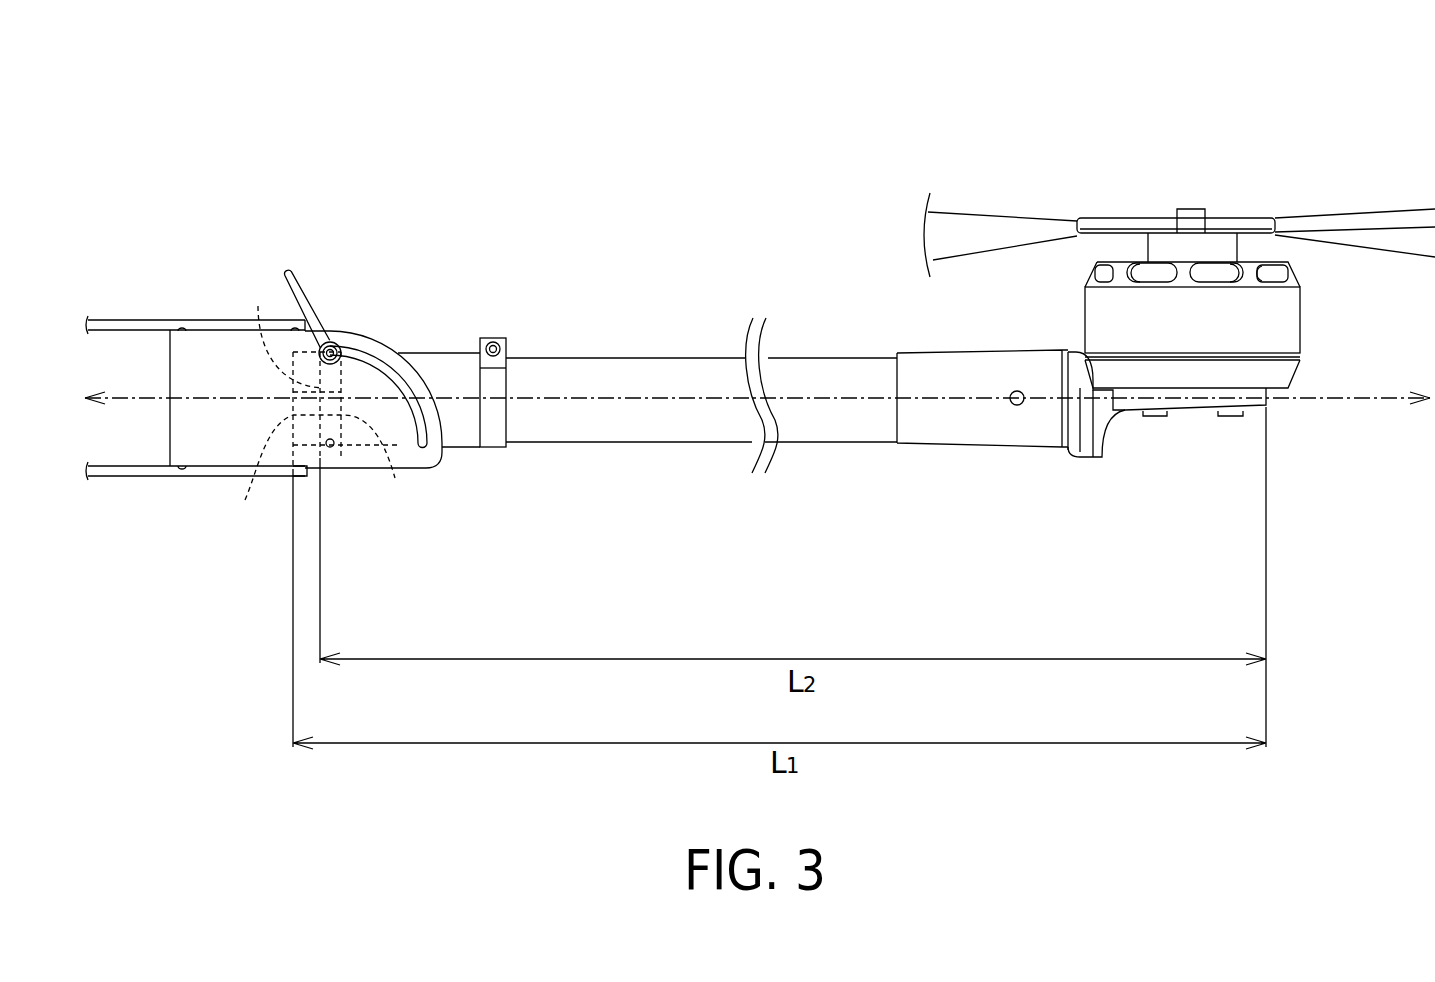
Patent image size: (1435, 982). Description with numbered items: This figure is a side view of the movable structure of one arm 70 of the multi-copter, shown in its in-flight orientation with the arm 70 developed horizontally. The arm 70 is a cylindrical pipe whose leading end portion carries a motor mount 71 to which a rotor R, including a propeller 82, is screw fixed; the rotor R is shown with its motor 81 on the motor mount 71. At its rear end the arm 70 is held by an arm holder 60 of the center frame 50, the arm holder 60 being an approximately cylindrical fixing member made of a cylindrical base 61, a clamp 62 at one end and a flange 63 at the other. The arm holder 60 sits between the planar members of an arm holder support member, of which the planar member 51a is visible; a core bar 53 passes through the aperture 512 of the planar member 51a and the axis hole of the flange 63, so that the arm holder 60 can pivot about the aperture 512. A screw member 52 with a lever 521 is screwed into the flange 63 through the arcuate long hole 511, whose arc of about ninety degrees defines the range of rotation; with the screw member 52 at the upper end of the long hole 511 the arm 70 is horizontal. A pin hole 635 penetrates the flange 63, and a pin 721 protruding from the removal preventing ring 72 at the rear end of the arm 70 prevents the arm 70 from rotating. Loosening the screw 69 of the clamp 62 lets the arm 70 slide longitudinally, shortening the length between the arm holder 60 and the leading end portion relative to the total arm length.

The center frame 50 is at (142, 320).
The planar member 51a is at (206, 350).
The screw member 52 is at (350, 352).
The lever 521 is at (306, 303).
The long hole 511 is at (405, 370).
The aperture 512 is at (329, 456).
The core bar 53 is at (336, 448).
The flange 63 is at (395, 478).
The pin hole 635 is at (258, 306).
The pin 721 is at (288, 383).
The removal preventing ring 72 is at (245, 500).
The arm holder 60 is at (470, 470).
The base 61 is at (451, 362).
The clamp 62 is at (500, 430).
The screw 69 is at (504, 348).
The arm 70 is at (658, 466).
The motor mount 71 is at (1192, 412).
The motor 81 is at (1113, 320).
The propeller 82 is at (972, 230).
The rotor R is at (1037, 92).